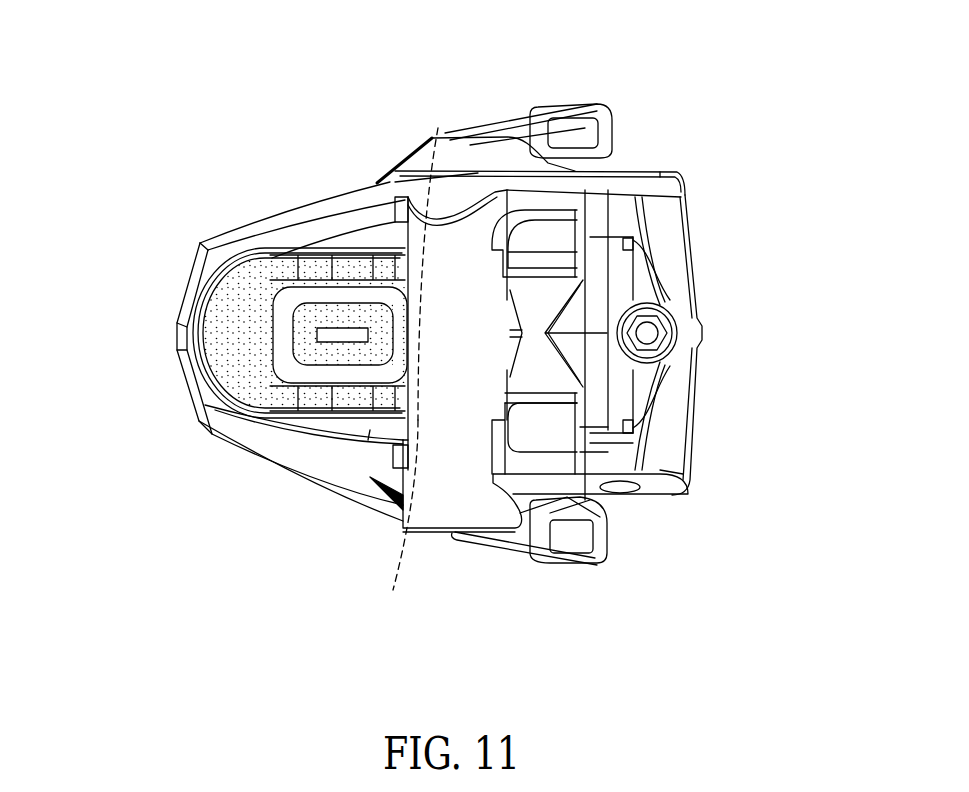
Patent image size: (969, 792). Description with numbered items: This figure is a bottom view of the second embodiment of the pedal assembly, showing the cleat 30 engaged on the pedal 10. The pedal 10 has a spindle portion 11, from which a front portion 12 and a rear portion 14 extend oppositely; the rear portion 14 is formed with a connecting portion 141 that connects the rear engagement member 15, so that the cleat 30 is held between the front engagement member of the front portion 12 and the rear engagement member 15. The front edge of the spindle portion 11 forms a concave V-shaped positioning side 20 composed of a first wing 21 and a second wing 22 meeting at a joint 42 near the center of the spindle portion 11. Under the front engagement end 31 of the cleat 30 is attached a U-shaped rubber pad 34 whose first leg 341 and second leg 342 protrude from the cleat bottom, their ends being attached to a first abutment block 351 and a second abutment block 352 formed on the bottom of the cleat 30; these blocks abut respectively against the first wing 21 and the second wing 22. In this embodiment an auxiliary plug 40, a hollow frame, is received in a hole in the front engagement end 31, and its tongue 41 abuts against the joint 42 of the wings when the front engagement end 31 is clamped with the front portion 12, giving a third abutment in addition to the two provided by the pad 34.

The pedal 10 is at (485, 505).
The spindle portion 11 is at (477, 367).
The front portion 12 is at (193, 377).
The rear portion 14 is at (570, 225).
The connecting portion 141 is at (605, 231).
The rear engagement member 15 is at (688, 445).
The positioning side 20 is at (507, 262).
The first wing 21 is at (433, 300).
The second wing 22 is at (457, 330).
The cleat 30 is at (617, 117).
The front engagement end 31 is at (233, 292).
The pad 34 is at (213, 400).
The first leg 341 is at (349, 268).
The second leg 342 is at (355, 400).
The first abutment block 351 is at (412, 305).
The second abutment block 352 is at (418, 420).
The auxiliary plug 40 is at (314, 324).
The tongue 41 is at (368, 440).
The joint 42 is at (552, 277).